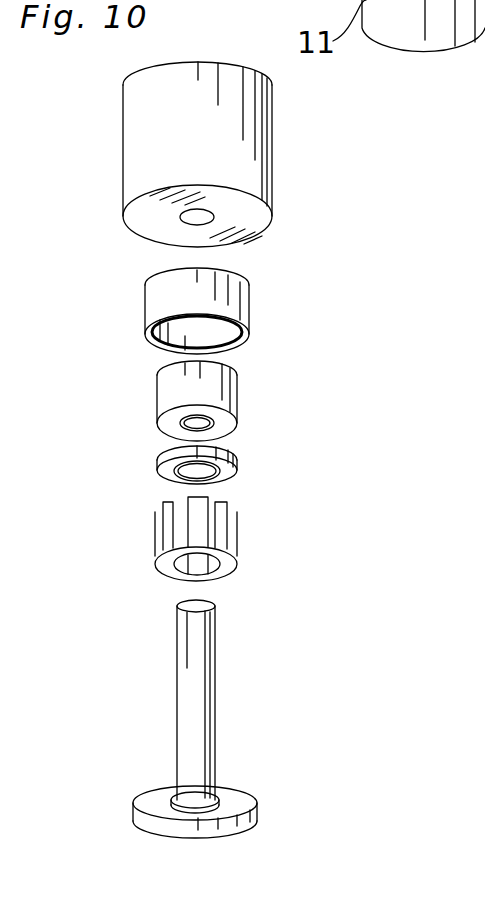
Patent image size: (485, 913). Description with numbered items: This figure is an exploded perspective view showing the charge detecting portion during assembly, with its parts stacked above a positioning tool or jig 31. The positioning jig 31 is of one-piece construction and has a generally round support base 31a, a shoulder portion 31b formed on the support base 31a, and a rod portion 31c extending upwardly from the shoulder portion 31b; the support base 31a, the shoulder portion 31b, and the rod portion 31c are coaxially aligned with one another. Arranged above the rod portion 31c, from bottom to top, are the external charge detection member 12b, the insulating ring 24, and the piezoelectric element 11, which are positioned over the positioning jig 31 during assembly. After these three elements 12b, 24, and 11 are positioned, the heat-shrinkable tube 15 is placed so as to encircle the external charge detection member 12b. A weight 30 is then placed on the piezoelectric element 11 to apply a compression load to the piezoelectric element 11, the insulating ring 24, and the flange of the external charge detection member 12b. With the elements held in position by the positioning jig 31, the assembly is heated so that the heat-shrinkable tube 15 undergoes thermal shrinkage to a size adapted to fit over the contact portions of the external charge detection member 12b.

The weight 30 is at (262, 141).
The heat-shrinkable tube 15 is at (249, 300).
The piezoelectric element 11 is at (237, 392).
The insulating ring 24 is at (236, 462).
The external charge detection member 12b is at (243, 541).
The positioning jig 31 is at (277, 711).
The rod portion 31c is at (198, 640).
The shoulder portion 31b is at (229, 790).
The support base 31a is at (239, 792).